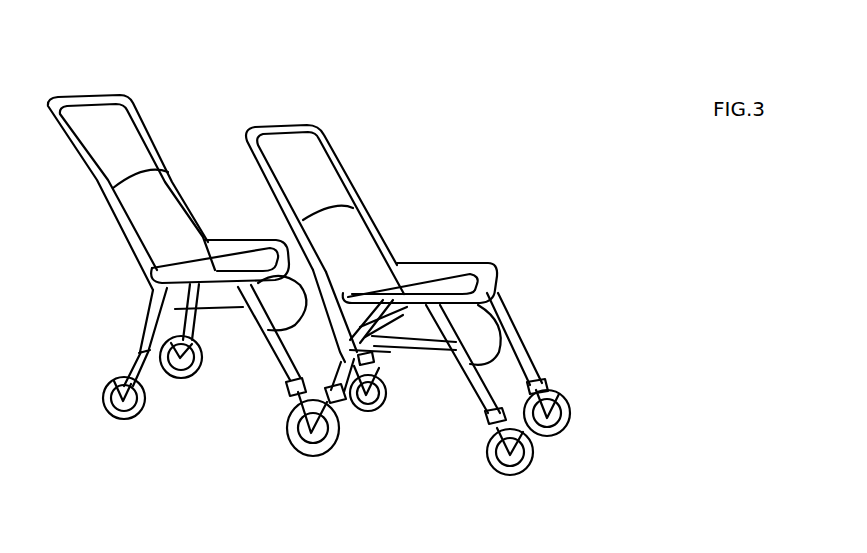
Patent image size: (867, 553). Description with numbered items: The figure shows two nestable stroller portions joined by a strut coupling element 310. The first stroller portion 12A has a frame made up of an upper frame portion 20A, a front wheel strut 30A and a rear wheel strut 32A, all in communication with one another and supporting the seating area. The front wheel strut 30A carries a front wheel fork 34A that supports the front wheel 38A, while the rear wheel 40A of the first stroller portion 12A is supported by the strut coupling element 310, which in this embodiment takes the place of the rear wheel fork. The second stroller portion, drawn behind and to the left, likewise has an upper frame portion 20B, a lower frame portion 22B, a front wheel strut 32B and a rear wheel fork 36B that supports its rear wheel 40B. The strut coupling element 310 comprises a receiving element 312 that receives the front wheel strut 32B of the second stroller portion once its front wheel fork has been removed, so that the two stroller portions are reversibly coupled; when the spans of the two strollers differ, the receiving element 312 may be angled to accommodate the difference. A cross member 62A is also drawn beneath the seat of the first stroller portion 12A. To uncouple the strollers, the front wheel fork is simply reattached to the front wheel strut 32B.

The first stroller portion 12A is at (440, 300).
The upper frame portion 20A is at (362, 190).
The upper frame portion 20B is at (198, 190).
The lower frame portion 22B is at (233, 319).
The front wheel strut 30A is at (531, 345).
The rear wheel strut 32A is at (378, 347).
The front wheel strut 32B is at (148, 315).
The front wheel fork 34A is at (541, 385).
The rear wheel fork 36B is at (137, 357).
The front wheel 38A is at (572, 412).
The rear wheel 40A is at (379, 405).
The rear wheel 40B is at (137, 423).
The cross member 62A is at (443, 349).
The strut coupling element 310 is at (345, 415).
The receiving element 312 is at (290, 398).